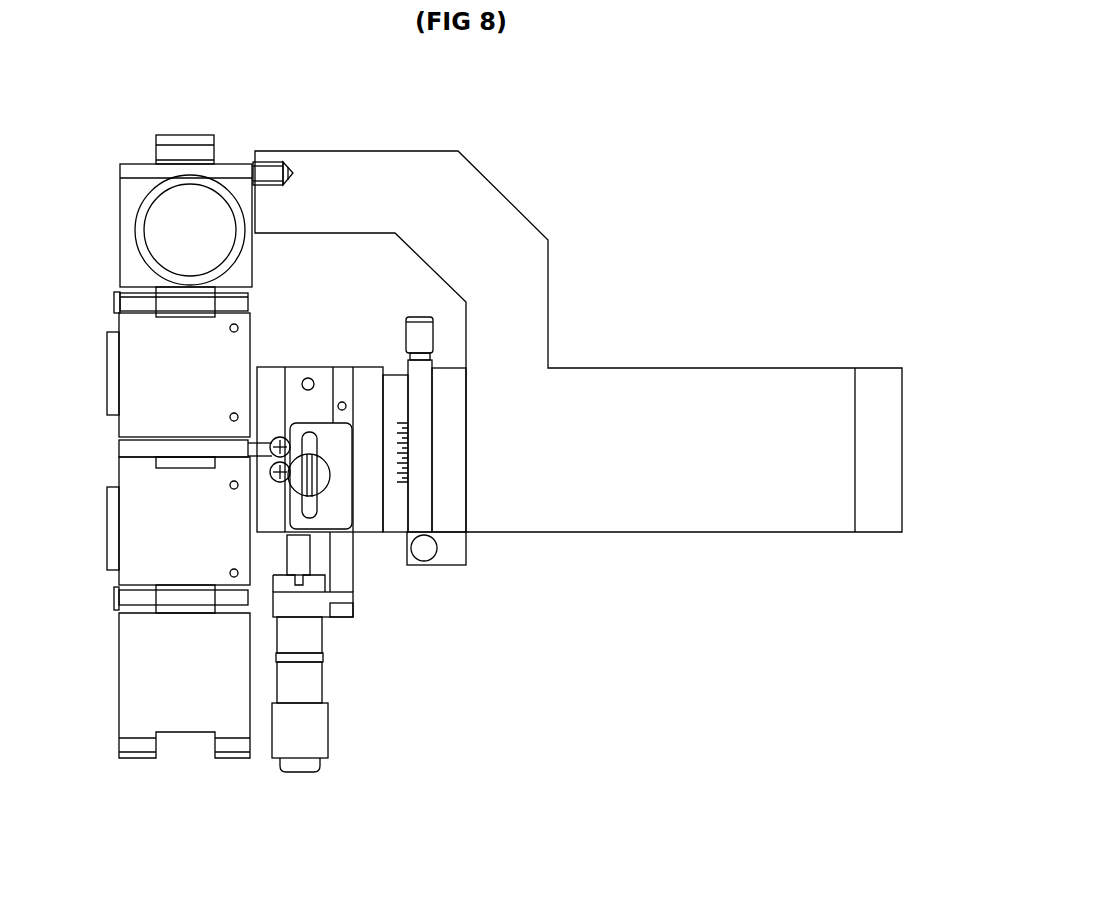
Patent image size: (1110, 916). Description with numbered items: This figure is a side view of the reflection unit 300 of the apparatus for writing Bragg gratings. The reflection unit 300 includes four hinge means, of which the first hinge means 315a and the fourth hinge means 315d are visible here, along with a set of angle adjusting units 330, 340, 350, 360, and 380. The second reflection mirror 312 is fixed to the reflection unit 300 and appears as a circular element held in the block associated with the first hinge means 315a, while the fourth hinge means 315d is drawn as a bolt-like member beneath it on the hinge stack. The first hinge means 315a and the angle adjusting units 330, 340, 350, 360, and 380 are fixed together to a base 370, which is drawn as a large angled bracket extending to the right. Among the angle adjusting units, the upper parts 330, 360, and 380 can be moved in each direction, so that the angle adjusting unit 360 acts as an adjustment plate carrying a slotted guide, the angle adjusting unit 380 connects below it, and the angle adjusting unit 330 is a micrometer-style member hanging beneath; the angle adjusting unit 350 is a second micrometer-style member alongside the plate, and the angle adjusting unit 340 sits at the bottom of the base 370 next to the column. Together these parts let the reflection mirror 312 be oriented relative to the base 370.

The reflection unit 300 is at (512, 108).
The second reflection mirror 312 is at (157, 242).
The first hinge means 315a is at (120, 172).
The fourth hinge means 315d is at (115, 302).
The angle adjusting unit 330 is at (317, 680).
The angle adjusting unit 340 is at (447, 557).
The angle adjusting unit 350 is at (415, 327).
The angle adjusting unit 360 is at (304, 376).
The base 370 is at (500, 212).
The angle adjusting unit 380 is at (350, 587).